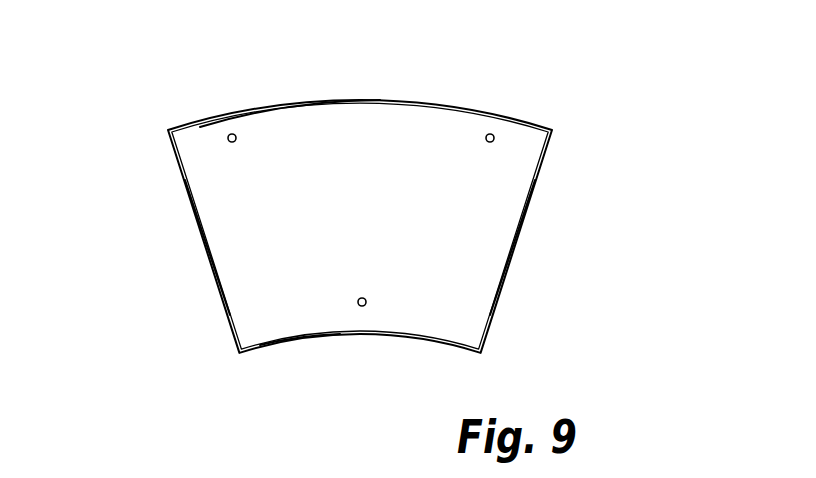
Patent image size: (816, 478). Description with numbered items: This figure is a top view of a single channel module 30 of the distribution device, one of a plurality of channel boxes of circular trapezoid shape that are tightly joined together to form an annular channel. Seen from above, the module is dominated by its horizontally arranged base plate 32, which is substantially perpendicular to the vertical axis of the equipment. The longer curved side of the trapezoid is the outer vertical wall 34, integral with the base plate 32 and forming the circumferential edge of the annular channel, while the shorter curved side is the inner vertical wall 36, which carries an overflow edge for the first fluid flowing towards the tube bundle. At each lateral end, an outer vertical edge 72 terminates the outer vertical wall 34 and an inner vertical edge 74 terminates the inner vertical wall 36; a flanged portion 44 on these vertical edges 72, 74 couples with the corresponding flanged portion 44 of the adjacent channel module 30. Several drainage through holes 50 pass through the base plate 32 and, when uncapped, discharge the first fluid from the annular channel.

The channel module 30 is at (366, 82).
The base plate 32 is at (408, 148).
The outer vertical wall 34 is at (302, 104).
The inner vertical wall 36 is at (295, 338).
The flanged portion 44 is at (220, 290).
The drainage through hole 50 is at (232, 134).
The outer vertical edge 72 is at (168, 130).
The inner vertical edge 74 is at (243, 352).